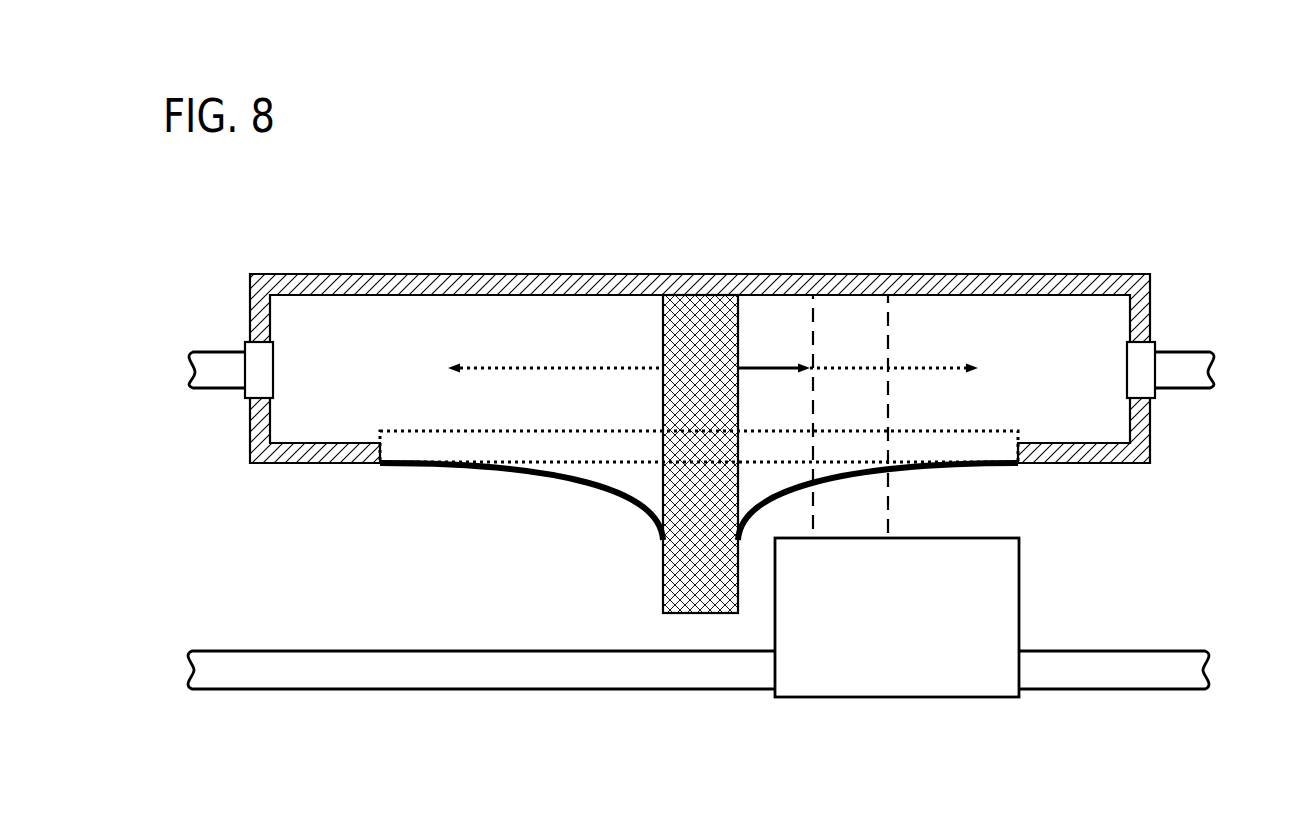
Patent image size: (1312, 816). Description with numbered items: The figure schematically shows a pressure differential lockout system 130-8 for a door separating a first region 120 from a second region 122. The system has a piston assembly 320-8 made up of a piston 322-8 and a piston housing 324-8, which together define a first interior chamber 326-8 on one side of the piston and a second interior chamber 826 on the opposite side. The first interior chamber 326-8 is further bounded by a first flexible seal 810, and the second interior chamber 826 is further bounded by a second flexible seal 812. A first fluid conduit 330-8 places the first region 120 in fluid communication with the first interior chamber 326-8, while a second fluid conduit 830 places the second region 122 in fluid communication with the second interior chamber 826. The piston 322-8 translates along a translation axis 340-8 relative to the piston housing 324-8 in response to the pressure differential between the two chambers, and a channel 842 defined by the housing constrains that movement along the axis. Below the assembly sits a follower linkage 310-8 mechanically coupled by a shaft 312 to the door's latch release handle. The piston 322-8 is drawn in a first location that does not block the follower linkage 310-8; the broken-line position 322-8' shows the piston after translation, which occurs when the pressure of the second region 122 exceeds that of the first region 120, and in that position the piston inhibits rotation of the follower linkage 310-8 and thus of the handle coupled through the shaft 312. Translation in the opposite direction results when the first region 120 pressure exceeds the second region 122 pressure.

The pressure differential lockout system 130-8 is at (1198, 228).
The piston assembly 320-8 is at (1079, 266).
The piston housing 324-8 is at (424, 280).
The first interior chamber 326-8 is at (1018, 325).
The piston 322-8 is at (712, 413).
The piston at second location 322-8' is at (859, 415).
The translation axis 340-8 is at (785, 368).
The second interior chamber 826 is at (550, 327).
The channel 842 is at (445, 451).
The second flexible seal 812 is at (562, 478).
The first flexible seal 810 is at (930, 481).
The second fluid conduit 830 is at (222, 355).
The first fluid conduit 330-8 is at (1185, 368).
The second region 122 is at (174, 368).
The first region 120 is at (1230, 369).
The follower linkage 310-8 is at (1000, 603).
The shaft 312 is at (1120, 670).